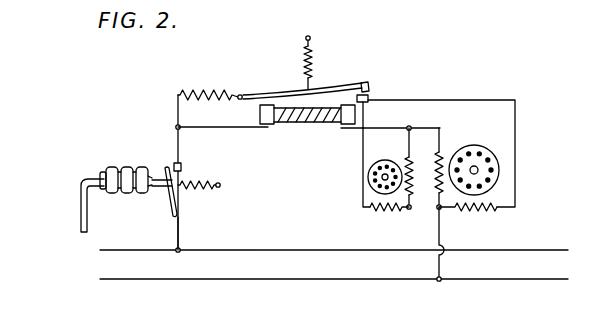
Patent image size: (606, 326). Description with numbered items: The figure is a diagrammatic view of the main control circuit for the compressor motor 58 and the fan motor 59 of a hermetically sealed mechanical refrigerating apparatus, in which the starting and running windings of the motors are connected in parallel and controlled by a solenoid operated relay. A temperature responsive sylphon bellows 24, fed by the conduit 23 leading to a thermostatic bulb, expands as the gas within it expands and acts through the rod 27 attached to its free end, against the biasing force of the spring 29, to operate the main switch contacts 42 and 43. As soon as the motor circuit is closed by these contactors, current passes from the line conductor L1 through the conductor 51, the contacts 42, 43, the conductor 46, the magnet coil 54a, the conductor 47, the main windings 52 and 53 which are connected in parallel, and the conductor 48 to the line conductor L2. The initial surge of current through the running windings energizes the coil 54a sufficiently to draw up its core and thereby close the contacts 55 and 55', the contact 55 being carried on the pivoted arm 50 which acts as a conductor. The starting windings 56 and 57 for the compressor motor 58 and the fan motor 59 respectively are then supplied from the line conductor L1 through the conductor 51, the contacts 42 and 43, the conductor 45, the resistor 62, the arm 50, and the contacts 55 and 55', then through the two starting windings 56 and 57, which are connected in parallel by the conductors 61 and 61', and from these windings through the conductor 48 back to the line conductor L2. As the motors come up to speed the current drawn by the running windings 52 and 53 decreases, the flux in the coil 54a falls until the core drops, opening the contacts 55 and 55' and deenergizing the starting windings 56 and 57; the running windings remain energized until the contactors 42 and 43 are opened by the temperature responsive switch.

The conduit 23 is at (80, 219).
The sylphon bellows 24 is at (125, 167).
The rod 27 is at (158, 187).
The spring 29 is at (195, 189).
The main switch contact 42 is at (167, 166).
The main switch contact 43 is at (182, 168).
The conductor 45 is at (177, 122).
The conductor 46 is at (220, 128).
The conductor 47 is at (412, 127).
The conductor 48 is at (441, 231).
The pivoted arm 50 is at (257, 94).
The conductor 51 is at (178, 233).
The main winding 52 is at (445, 156).
The main winding 53 is at (406, 163).
The magnet coil 54a is at (311, 129).
The contact 55 is at (354, 72).
The contact 55' is at (381, 89).
The starting winding 56 is at (493, 212).
The starting winding 57 is at (382, 212).
The compressor motor 58 is at (484, 170).
The fan motor 59 is at (381, 178).
The conductor 61 is at (441, 137).
The conductor 61' is at (350, 167).
The resistor 62 is at (193, 91).
The line conductor L1 is at (256, 251).
The line conductor L2 is at (348, 280).